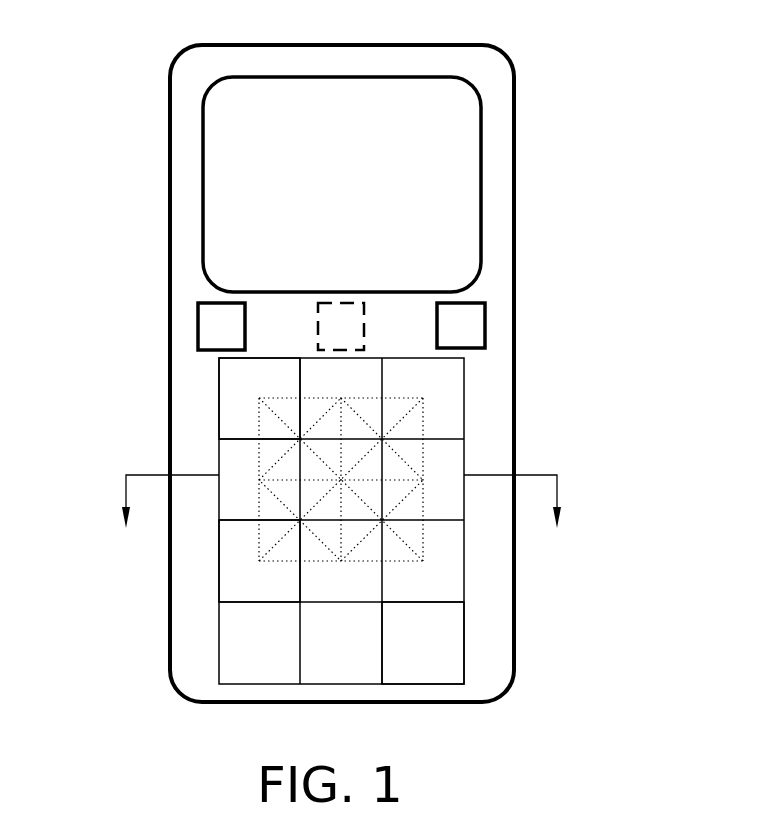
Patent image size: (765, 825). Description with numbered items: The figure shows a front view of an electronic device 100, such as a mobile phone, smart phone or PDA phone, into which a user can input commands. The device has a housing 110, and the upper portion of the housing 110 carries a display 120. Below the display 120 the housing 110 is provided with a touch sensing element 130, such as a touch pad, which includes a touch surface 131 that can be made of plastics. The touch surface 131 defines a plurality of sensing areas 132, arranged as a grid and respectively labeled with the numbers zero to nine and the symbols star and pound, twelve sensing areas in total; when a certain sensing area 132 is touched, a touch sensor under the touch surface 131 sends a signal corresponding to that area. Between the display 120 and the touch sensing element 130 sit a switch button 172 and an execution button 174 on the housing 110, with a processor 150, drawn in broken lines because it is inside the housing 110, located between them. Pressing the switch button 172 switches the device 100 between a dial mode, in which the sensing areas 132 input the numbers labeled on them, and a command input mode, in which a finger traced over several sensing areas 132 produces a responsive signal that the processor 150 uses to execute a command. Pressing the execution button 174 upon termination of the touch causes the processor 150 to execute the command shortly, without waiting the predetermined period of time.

The electronic device 100 is at (560, 80).
The housing 110 is at (513, 328).
The display 120 is at (203, 148).
The touch sensing element 130 is at (500, 448).
The touch surface 131 is at (488, 634).
The sensing area 132 is at (230, 389).
The processor 150 is at (318, 307).
The switch button 172 is at (485, 325).
The execution button 174 is at (198, 318).